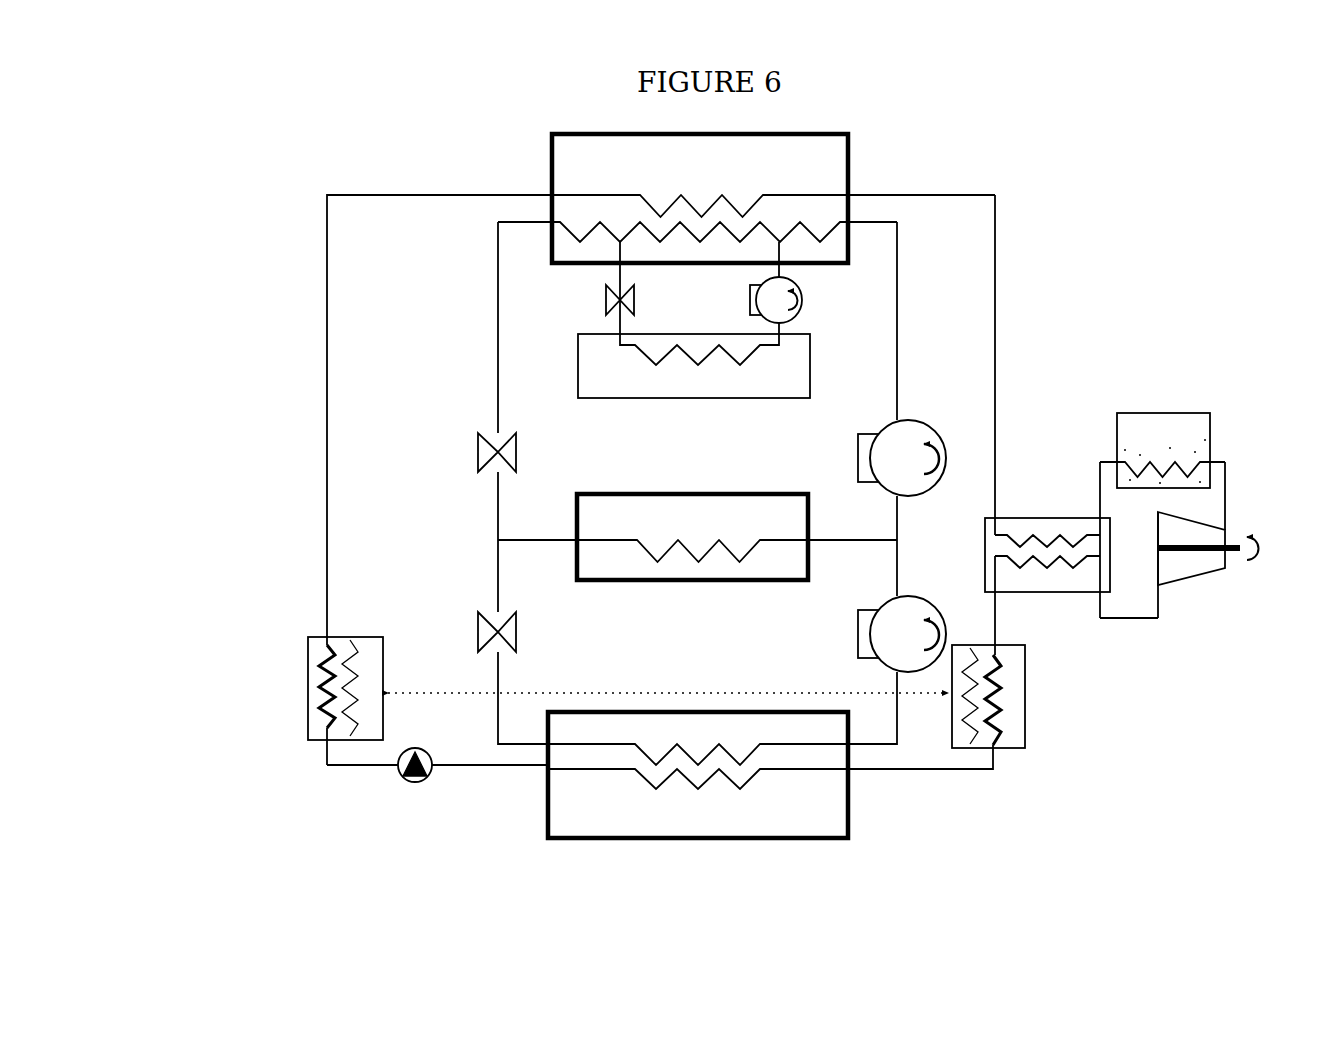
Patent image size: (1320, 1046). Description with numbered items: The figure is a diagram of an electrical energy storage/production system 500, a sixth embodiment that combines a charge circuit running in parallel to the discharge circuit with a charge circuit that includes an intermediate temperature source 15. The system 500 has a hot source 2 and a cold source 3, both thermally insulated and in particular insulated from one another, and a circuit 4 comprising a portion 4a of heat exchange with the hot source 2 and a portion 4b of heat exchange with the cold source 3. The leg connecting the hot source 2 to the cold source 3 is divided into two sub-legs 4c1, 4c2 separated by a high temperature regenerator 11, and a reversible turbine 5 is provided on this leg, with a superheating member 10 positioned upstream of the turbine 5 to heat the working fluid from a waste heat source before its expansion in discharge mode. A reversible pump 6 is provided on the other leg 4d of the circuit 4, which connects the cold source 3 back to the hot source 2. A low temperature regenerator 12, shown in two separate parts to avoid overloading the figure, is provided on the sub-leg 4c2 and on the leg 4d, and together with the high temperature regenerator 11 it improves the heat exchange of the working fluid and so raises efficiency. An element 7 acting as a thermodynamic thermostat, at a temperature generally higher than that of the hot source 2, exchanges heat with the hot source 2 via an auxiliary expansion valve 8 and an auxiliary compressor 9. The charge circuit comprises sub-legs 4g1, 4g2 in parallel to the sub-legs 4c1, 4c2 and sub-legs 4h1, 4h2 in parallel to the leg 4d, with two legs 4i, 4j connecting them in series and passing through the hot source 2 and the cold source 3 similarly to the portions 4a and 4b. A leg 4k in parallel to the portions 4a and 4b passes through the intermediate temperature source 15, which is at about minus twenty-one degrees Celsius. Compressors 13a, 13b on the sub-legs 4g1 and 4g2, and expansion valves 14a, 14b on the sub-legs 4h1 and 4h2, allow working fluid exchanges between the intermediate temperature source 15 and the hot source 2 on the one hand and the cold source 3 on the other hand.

The system 500 is at (1072, 198).
The hot source 2 is at (550, 150).
The cold source 3 is at (850, 832).
The circuit 4 is at (965, 197).
The portion of heat exchange with the hot source 4a is at (822, 194).
The portion of heat exchange with the cold source 4b is at (820, 772).
The sub-leg 4c1 is at (997, 290).
The sub-leg 4c2 is at (997, 617).
The leg 4d is at (327, 493).
The sub-leg 4g1 is at (899, 340).
The sub-leg 4g2 is at (899, 559).
The sub-leg 4h1 is at (498, 333).
The sub-leg 4h2 is at (498, 568).
The leg 4i is at (829, 240).
The leg 4j is at (804, 744).
The leg 4k is at (535, 541).
The reversible turbine 5 is at (1200, 570).
The reversible pump 6 is at (405, 782).
The element 7 is at (703, 400).
The auxiliary expansion valve 8 is at (606, 300).
The auxiliary compressor 9 is at (803, 303).
The superheating member 10 is at (1160, 413).
The high temperature regenerator 11 is at (1043, 518).
The low temperature regenerator 12 is at (306, 658).
The compressor 13a is at (856, 458).
The compressor 13b is at (856, 633).
The expansion valve 14a is at (514, 453).
The expansion valve 14b is at (478, 631).
The intermediate temperature source 15 is at (663, 582).